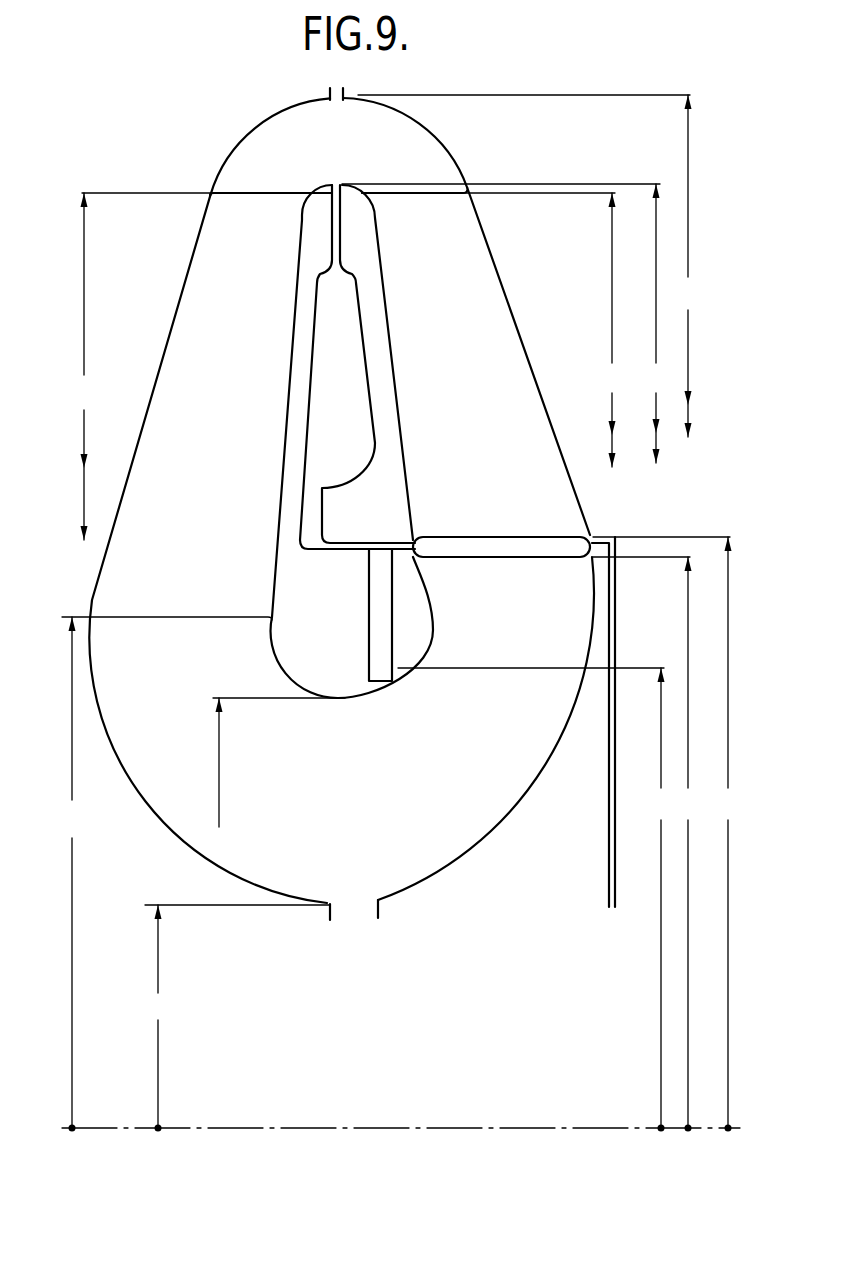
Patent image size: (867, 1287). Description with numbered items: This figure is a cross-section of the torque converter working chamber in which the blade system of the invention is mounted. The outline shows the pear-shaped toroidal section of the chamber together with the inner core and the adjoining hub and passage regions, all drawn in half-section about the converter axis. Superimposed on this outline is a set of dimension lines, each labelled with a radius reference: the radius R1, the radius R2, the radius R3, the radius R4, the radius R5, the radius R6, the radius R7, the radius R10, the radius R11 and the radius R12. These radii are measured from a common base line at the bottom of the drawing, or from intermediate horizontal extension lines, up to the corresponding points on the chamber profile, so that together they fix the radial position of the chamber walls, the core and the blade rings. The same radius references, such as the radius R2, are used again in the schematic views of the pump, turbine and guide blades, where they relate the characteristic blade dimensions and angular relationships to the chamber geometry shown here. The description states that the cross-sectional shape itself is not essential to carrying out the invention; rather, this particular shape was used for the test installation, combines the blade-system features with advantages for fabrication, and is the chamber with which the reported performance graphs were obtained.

The radius R1 is at (531, 266).
The radius R2 is at (667, 834).
The radius R3 is at (496, 330).
The radius R4 is at (148, 366).
The radius R5 is at (167, 874).
The radius R6 is at (537, 900).
The radius R7 is at (649, 844).
The radius R10 is at (237, 1018).
The radius R11 is at (279, 774).
The radius R12 is at (514, 323).